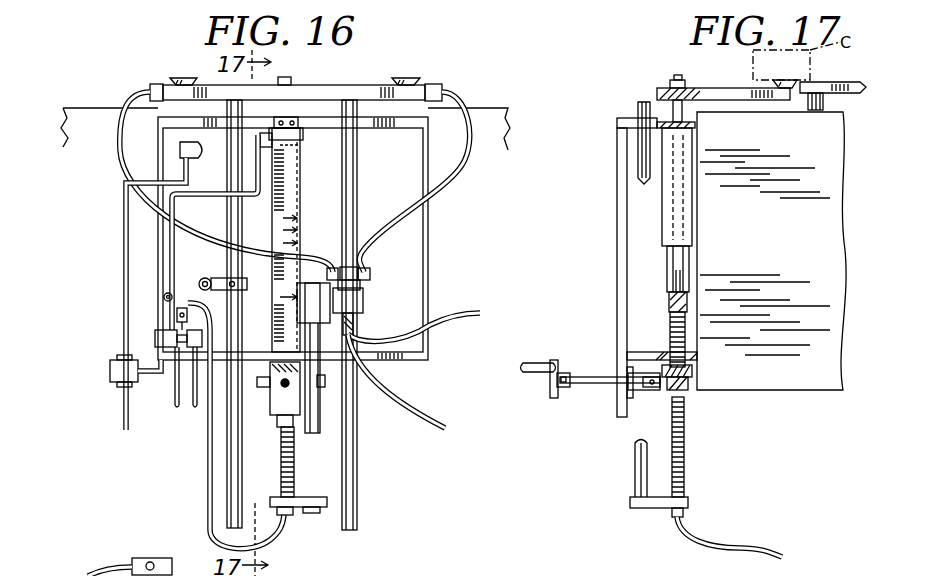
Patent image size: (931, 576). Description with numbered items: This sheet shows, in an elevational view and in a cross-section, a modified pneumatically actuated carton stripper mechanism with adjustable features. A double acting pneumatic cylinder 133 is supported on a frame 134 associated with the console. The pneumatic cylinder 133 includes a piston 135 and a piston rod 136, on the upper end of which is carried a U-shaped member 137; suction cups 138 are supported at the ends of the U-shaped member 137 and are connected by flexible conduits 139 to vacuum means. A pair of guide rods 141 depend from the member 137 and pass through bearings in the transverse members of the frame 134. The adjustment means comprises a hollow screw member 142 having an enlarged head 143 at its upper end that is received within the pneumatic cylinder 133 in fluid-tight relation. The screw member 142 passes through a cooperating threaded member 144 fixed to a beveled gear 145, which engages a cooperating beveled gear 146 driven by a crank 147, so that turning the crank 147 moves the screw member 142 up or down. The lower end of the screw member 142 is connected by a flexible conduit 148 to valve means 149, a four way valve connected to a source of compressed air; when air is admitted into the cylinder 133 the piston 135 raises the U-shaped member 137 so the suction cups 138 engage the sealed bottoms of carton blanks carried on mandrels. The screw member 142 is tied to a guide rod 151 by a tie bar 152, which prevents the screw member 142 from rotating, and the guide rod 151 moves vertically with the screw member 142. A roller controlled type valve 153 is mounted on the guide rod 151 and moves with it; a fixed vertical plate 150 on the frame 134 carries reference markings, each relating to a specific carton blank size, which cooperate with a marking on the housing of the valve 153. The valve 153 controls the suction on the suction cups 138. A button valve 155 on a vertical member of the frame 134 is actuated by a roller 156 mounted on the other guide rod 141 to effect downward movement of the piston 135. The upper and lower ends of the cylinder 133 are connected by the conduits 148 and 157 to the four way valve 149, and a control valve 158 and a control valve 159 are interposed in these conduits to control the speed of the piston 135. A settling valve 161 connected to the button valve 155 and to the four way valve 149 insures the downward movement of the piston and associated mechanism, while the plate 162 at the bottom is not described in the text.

In FIG. 17, the double acting pneumatic cylinder 133 is at (667, 205).
In FIG. 16, the frame 134 is at (423, 243).
In FIG. 17, the frame 134 is at (771, 251).
In FIG. 17, the piston 135 is at (687, 287).
In FIG. 16, the piston rod 136 is at (288, 78).
In FIG. 17, the piston rod 136 is at (677, 260).
In FIG. 16, the U-shaped member 137 is at (325, 86).
In FIG. 17, the U-shaped member 137 is at (733, 58).
In FIG. 16, the suction cups 138 is at (183, 77).
In FIG. 17, the suction cups 138 is at (787, 82).
In FIG. 16, the flexible conduits 139 is at (118, 150).
In FIG. 16, the guide rods 141 is at (227, 210).
In FIG. 16, the hollow screw member 142 is at (280, 465).
In FIG. 17, the hollow screw member 142 is at (684, 452).
In FIG. 16, the enlarged head 143 is at (291, 394).
In FIG. 17, the enlarged head 143 is at (683, 305).
In FIG. 17, the threaded member 144 is at (685, 390).
In FIG. 17, the beveled gear 145 is at (692, 370).
In FIG. 17, the beveled gear 146 is at (664, 393).
In FIG. 17, the crank 147 is at (555, 398).
In FIG. 16, the flexible conduit 148 is at (207, 446).
In FIG. 17, the flexible conduit 148 is at (710, 543).
In FIG. 16, the valve means 149 is at (155, 338).
In FIG. 16, the fixed vertical plate 150 is at (277, 237).
In FIG. 16, the guide rod 151 is at (313, 453).
In FIG. 17, the guide rod 151 is at (635, 462).
In FIG. 16, the tie bar 152 is at (298, 512).
In FIG. 16, the roller controlled type valve 153 is at (323, 297).
In FIG. 16, the button valve 155 is at (204, 160).
In FIG. 16, the roller 156 is at (205, 278).
In FIG. 16, the conduit 157 is at (167, 257).
In FIG. 16, the control valve 158 is at (177, 314).
In FIG. 16, the control valve 159 is at (164, 296).
In FIG. 16, the settling valve 161 is at (112, 371).
In FIG. 17, the plate 162 is at (657, 509).